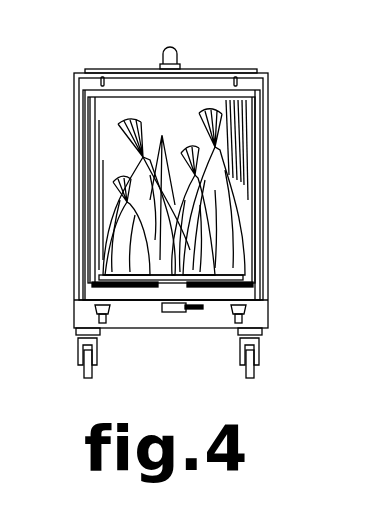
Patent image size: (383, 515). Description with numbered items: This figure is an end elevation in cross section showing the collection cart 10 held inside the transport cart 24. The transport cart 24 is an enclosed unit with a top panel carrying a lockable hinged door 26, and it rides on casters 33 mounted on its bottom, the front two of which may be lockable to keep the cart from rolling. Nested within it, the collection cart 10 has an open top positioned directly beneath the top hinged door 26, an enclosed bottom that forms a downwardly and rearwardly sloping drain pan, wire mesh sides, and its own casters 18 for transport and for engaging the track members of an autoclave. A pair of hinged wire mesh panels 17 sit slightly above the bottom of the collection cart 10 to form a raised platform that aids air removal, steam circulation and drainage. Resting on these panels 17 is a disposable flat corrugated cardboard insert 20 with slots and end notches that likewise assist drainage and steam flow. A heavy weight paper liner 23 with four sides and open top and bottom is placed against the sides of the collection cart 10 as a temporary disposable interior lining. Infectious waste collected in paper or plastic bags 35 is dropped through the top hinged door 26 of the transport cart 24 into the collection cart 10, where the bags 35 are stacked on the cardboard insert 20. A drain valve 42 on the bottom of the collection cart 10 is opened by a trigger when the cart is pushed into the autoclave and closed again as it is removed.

The collection cart 10 is at (262, 141).
The hinged wire mesh panels 17 is at (133, 287).
The casters 18 is at (97, 318).
The corrugated cardboard insert 20 is at (208, 272).
The paper liner 23 is at (95, 136).
The transport cart 24 is at (70, 178).
The lockable hinged door 26 is at (206, 68).
The casters 33 is at (80, 372).
The bags 35 is at (174, 192).
The drain valve 42 is at (173, 312).